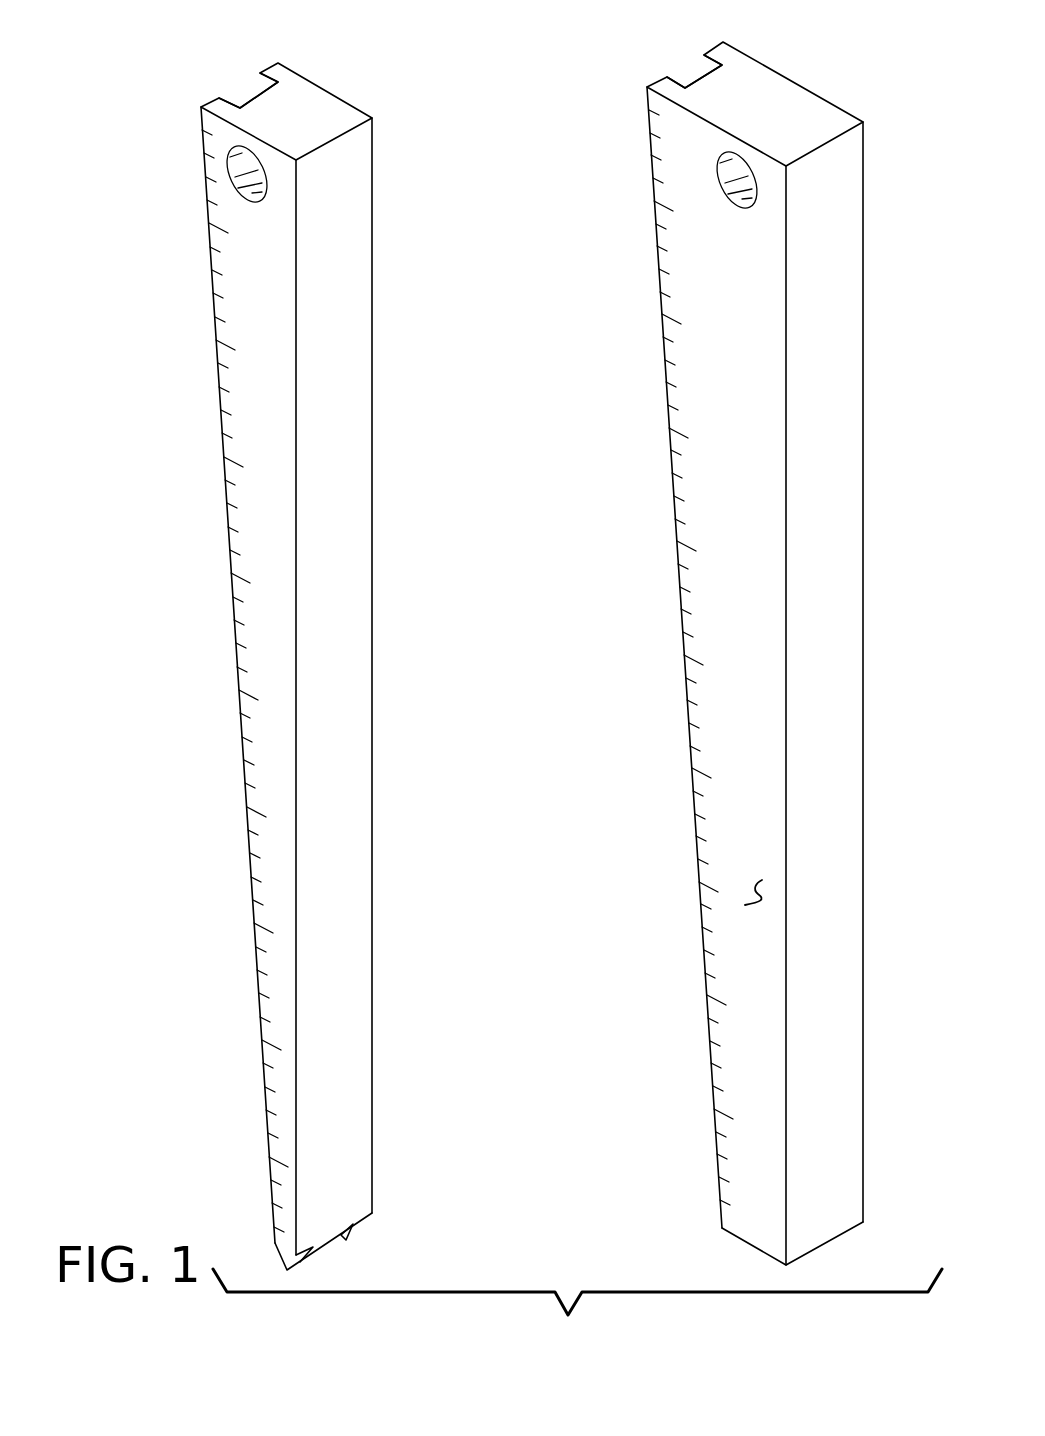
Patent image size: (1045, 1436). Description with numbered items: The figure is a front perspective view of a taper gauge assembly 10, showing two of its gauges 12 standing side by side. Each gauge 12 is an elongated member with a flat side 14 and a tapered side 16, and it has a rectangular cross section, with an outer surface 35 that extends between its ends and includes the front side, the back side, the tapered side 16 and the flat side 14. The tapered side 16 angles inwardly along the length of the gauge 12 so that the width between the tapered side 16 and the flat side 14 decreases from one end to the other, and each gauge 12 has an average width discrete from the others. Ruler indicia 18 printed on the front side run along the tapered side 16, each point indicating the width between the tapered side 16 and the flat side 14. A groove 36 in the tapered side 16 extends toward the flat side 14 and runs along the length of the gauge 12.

The taper gauge assembly 10 is at (145, 158).
The gauge 12 is at (598, 150).
The flat side 14 is at (340, 542).
The tapered side 16 is at (217, 448).
The ruler indicia 18 is at (243, 318).
The outer surface 35 is at (745, 905).
The groove 36 is at (240, 84).